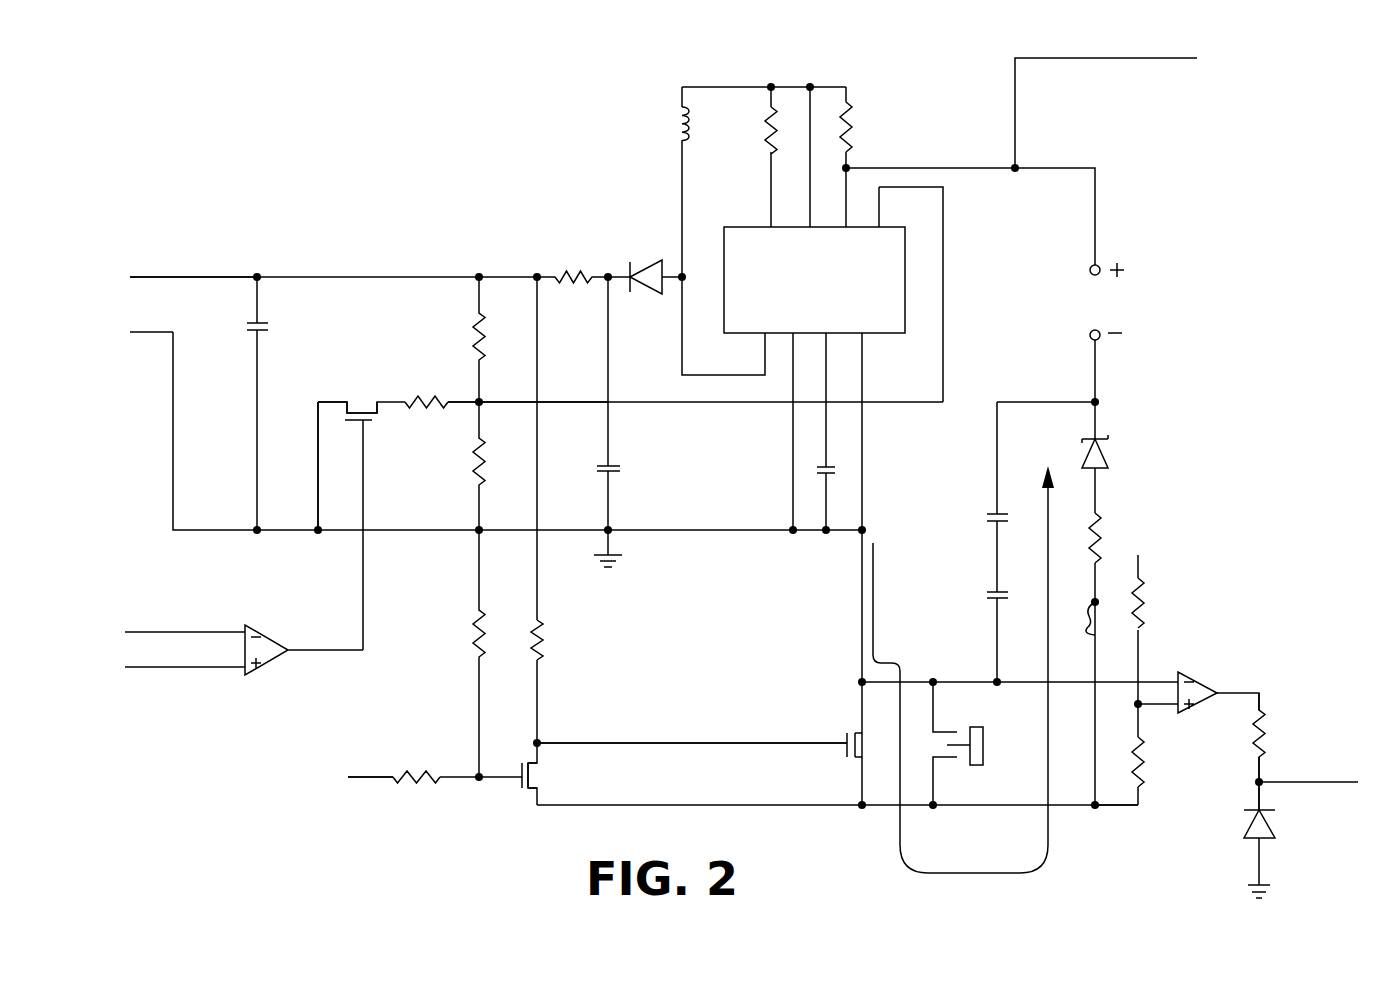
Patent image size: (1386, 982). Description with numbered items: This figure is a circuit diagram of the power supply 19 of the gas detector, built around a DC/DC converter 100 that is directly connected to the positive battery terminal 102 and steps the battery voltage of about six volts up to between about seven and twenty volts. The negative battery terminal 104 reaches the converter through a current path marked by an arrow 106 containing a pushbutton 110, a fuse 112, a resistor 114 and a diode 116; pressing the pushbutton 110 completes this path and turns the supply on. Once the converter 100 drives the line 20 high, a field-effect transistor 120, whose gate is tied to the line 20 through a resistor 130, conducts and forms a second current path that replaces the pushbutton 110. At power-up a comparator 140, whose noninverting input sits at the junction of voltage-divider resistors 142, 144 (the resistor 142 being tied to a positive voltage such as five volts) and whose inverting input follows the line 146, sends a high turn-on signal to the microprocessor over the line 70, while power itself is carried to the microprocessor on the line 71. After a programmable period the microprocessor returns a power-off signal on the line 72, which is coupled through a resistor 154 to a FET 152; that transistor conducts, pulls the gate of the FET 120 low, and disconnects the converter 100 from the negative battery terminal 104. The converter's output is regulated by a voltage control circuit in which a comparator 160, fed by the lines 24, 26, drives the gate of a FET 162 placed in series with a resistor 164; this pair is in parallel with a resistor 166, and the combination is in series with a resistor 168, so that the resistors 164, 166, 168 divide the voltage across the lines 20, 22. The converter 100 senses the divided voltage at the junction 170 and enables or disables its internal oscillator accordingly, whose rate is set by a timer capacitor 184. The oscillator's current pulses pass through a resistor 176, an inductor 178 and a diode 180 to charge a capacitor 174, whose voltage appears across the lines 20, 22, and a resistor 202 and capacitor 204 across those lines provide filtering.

The power supply 19 is at (278, 186).
The line 20 is at (150, 277).
The line 22 is at (148, 332).
The line 24 is at (186, 632).
The line 26 is at (184, 667).
The line 70 is at (1310, 782).
The line 71 is at (1138, 58).
The line 72 is at (350, 777).
The DC/DC converter 100 is at (905, 287).
The positive battery terminal 102 is at (1099, 266).
The negative battery terminal 104 is at (1100, 340).
The current path 106 is at (873, 583).
The pushbutton 110 is at (983, 762).
The fuse 112 is at (1092, 606).
The resistor 114 is at (1101, 524).
The diode 116 is at (1106, 444).
The field-effect transistor 120 is at (847, 742).
The resistor 130 is at (541, 638).
The comparator 140 is at (1204, 692).
The resistor 142 is at (1145, 600).
The resistor 144 is at (1143, 745).
The line 146 is at (1118, 805).
The FET 152 is at (515, 770).
The resistor 154 is at (400, 770).
The comparator 160 is at (268, 638).
The FET 162 is at (368, 420).
The resistor 164 is at (430, 398).
The resistor 166 is at (485, 472).
The resistor 168 is at (484, 342).
The junction 170 is at (479, 402).
The capacitor 174 is at (616, 462).
The resistor 176 is at (772, 107).
The inductor 178 is at (682, 116).
The diode 180 is at (650, 262).
The timer capacitor 184 is at (832, 466).
The resistor 202 is at (578, 276).
The capacitor 204 is at (268, 328).